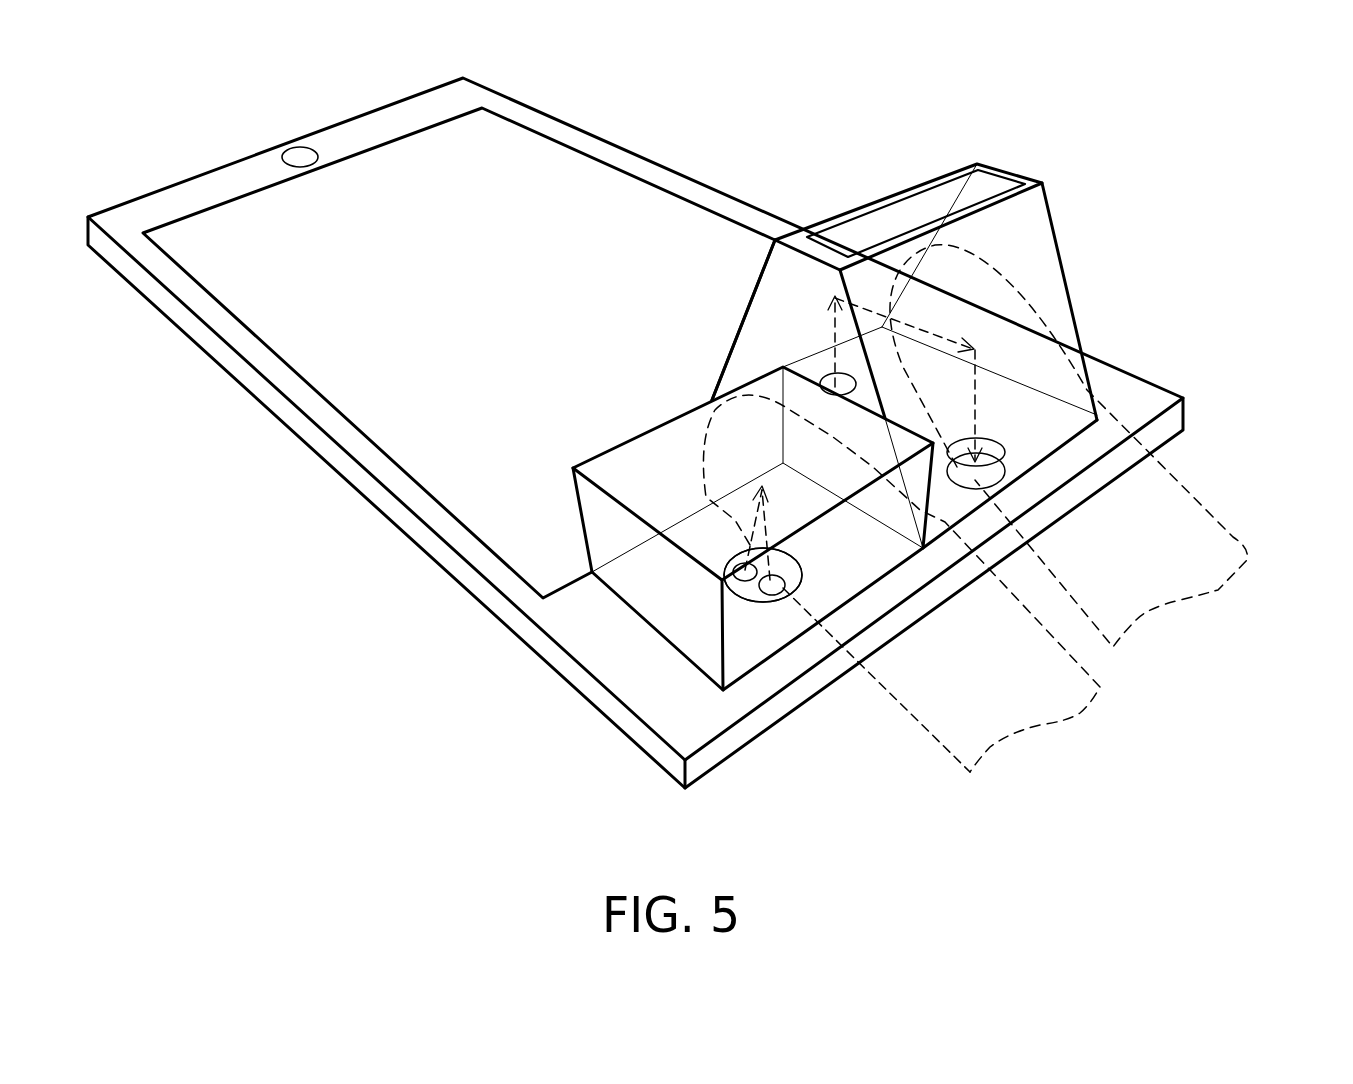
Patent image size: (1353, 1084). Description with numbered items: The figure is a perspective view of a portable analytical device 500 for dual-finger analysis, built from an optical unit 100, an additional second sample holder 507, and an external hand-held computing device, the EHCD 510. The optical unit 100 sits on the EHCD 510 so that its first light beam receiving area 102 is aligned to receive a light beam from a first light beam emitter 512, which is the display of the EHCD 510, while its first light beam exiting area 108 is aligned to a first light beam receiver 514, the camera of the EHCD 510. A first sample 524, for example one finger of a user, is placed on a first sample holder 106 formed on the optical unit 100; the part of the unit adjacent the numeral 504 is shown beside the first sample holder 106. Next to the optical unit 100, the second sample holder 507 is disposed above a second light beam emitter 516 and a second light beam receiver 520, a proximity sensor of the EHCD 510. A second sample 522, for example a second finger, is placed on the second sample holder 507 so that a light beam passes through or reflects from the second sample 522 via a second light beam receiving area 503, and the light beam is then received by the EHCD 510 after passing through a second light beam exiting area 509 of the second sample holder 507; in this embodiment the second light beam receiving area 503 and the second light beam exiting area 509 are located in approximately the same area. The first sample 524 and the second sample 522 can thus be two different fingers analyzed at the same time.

The portable analytical device 500 is at (1166, 198).
The EHCD 510 is at (295, 420).
The first light beam emitter 512 is at (532, 544).
The optical unit 100 is at (912, 359).
The first light beam receiving area 102 is at (825, 377).
The first sample holder 106 is at (880, 205).
The first light beam exiting area 108 is at (1007, 447).
The housing 504 is at (738, 325).
The second sample holder 507 is at (705, 610).
The second light beam receiving area 503 is at (742, 592).
The second light beam exiting area 509 is at (763, 575).
The first light beam receiver 514 is at (1007, 477).
The second light beam emitter 516 is at (770, 598).
The second light beam receiver 520 is at (735, 563).
The second sample 522 is at (927, 738).
The first sample 524 is at (1233, 538).